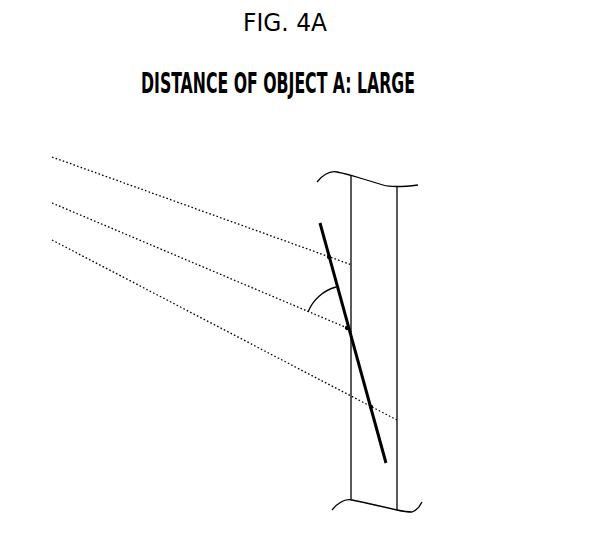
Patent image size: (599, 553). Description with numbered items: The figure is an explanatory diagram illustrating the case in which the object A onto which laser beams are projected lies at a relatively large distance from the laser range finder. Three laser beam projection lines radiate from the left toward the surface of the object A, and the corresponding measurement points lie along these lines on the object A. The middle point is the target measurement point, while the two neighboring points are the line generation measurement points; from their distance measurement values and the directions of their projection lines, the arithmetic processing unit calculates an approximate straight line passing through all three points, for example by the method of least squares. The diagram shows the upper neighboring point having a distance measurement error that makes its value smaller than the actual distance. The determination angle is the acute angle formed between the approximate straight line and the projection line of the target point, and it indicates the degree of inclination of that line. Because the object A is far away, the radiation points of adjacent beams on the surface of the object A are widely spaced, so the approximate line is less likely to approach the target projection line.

The object A is at (351, 212).